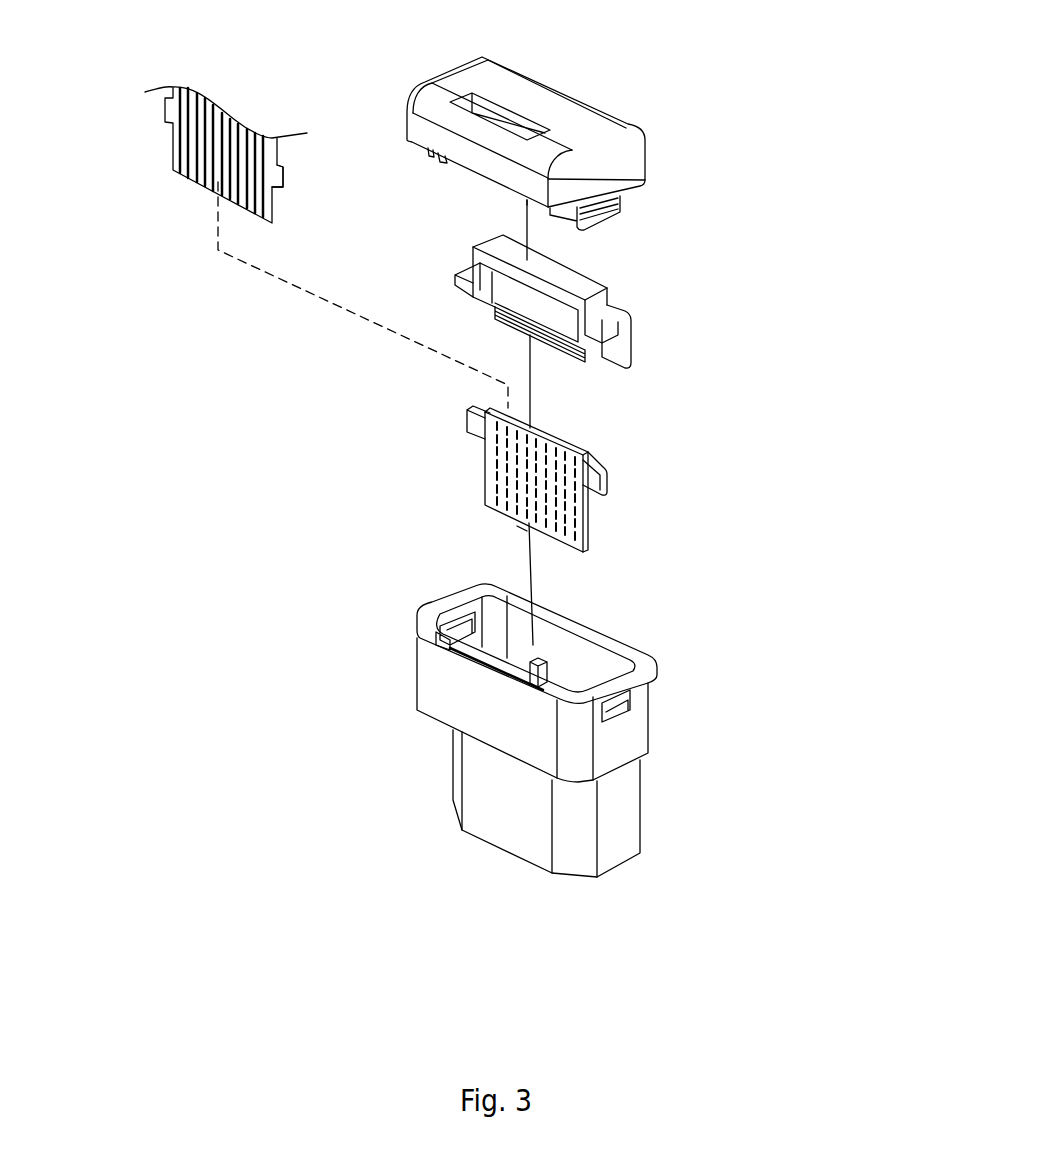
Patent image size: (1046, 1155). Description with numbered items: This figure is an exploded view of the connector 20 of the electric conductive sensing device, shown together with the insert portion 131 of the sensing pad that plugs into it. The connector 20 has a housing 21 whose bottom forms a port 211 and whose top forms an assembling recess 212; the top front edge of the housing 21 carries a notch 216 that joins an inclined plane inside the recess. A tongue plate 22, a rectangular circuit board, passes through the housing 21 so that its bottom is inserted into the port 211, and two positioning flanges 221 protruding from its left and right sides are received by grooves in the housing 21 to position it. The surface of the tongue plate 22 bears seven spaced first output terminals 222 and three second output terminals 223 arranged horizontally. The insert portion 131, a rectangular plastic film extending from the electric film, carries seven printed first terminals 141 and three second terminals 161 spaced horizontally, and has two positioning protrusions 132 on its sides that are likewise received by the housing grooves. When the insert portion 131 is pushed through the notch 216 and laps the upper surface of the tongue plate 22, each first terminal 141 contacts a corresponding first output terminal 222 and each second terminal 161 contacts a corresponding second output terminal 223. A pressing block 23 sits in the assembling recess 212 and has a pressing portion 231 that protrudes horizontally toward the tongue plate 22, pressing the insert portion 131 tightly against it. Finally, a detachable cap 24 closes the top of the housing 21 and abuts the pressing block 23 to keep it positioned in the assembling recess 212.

The connector 20 is at (667, 554).
The housing 21 is at (583, 749).
The port 211 is at (623, 857).
The assembling recess 212 is at (583, 647).
The notch 216 is at (463, 655).
The tongue plate 22 is at (546, 492).
The positioning flanges 221 is at (605, 472).
The first output terminals 222 is at (507, 517).
The second output terminals 223 is at (522, 535).
The pressing block 23 is at (584, 330).
The pressing portion 231 is at (578, 360).
The cap 24 is at (588, 113).
The insert portion 131 is at (276, 215).
The positioning protrusions 132 is at (280, 162).
The first terminals 141 is at (200, 177).
The second terminals 161 is at (218, 182).